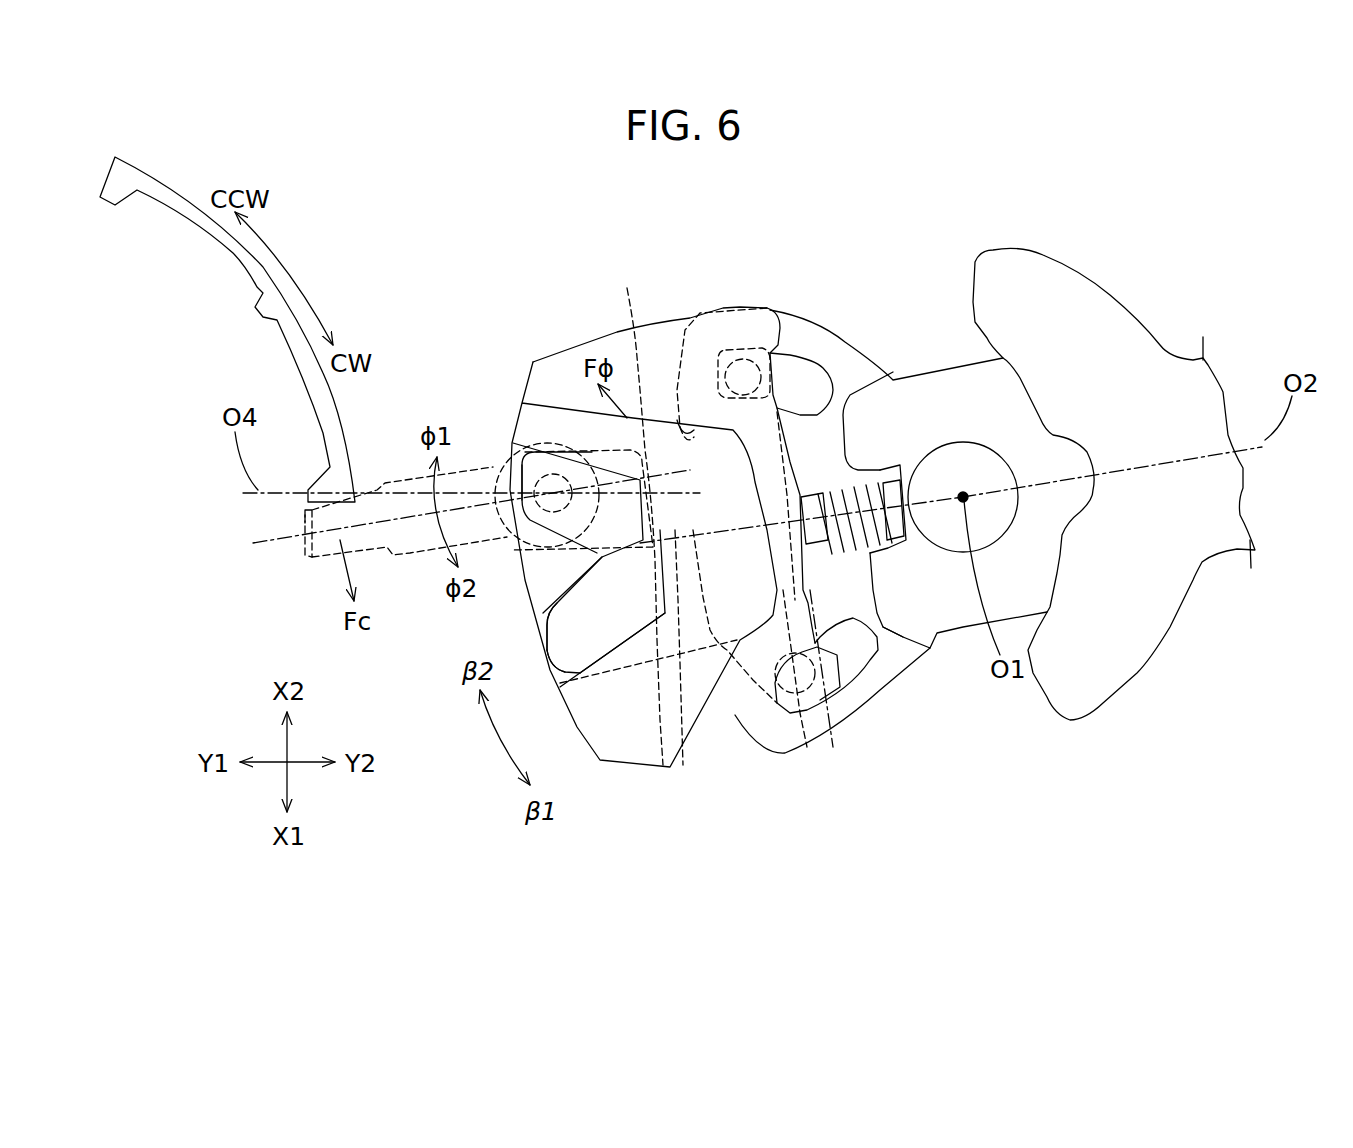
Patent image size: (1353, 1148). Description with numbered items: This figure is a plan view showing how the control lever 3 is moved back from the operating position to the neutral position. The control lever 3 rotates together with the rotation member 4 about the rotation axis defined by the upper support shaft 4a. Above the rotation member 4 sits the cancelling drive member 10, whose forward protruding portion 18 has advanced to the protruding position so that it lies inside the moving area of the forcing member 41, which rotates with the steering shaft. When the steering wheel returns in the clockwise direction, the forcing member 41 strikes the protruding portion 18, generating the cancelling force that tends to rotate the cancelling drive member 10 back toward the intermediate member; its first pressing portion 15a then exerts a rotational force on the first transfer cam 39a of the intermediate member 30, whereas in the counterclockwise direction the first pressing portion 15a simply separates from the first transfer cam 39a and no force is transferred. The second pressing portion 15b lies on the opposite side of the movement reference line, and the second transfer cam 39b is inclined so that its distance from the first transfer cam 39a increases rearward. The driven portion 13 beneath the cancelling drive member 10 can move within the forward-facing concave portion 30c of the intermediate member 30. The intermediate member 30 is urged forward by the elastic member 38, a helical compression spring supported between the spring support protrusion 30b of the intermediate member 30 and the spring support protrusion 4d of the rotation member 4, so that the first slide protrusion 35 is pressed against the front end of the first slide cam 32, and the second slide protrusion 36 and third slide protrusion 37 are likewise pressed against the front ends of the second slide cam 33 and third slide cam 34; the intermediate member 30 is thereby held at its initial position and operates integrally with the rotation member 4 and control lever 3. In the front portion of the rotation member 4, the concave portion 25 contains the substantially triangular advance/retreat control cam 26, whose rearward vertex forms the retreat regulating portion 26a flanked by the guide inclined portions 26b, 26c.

The control lever 3 is at (1124, 306).
The rotation member 4 is at (957, 636).
The upper support shaft 4a is at (972, 460).
The spring support protrusion 4d is at (881, 468).
The cancelling drive member 10 is at (408, 562).
The driven portion 13 is at (508, 450).
The first pressing portion 15a is at (638, 507).
The second pressing portion 15b is at (684, 770).
The protruding portion 18 is at (310, 547).
The concave portion 25 is at (560, 647).
The advance/retreat control cam 26 is at (562, 585).
The retreat regulating portion 26a is at (604, 557).
The guide inclined portion 26b is at (568, 548).
The guide inclined portion 26c is at (560, 607).
The intermediate member 30 is at (551, 354).
The spring support protrusion 30b is at (798, 495).
The concave portion 30c is at (603, 560).
The first slide cam 32 is at (810, 707).
The second slide cam 33 is at (870, 660).
The third slide cam 34 is at (837, 385).
The first slide protrusion 35 is at (780, 757).
The second slide protrusion 36 is at (833, 747).
The third slide protrusion 37 is at (745, 370).
The elastic member 38 is at (903, 637).
The first transfer cam 39a is at (680, 340).
The second transfer cam 39b is at (713, 650).
The forcing member 41 is at (233, 265).